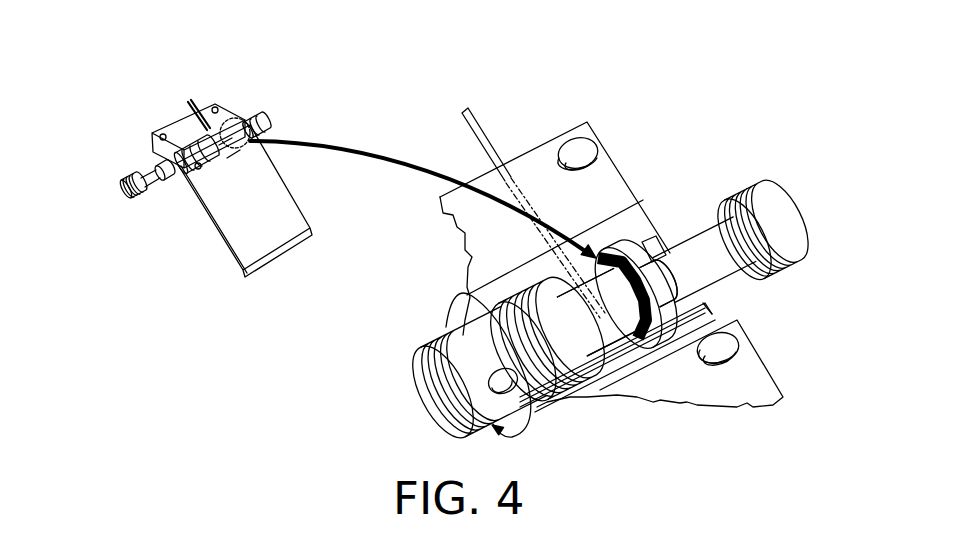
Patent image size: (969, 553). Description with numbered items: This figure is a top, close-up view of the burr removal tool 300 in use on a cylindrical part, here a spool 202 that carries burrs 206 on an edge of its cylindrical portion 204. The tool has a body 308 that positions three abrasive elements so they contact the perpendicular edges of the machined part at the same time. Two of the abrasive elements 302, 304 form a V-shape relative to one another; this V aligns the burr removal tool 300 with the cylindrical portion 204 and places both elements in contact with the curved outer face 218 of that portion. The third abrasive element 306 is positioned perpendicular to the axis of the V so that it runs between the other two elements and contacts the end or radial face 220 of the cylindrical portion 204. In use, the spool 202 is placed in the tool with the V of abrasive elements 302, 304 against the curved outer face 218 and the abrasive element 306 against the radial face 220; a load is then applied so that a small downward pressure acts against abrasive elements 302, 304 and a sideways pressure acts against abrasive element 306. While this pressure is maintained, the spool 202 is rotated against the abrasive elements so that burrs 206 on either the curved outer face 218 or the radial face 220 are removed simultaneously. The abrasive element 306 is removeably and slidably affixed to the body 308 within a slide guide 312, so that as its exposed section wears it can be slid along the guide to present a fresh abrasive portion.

The spool 202 is at (582, 352).
The cylindrical portion 204 is at (646, 243).
The burrs 206 is at (606, 238).
The curved outer face 218 is at (636, 258).
The radial face 220 is at (580, 240).
The burr removal tool 300 is at (502, 128).
The abrasive element 302 is at (621, 378).
The abrasive element 304 is at (576, 278).
The abrasive element 306 is at (630, 393).
The body 308 is at (222, 260).
The slide guide 312 is at (271, 224).